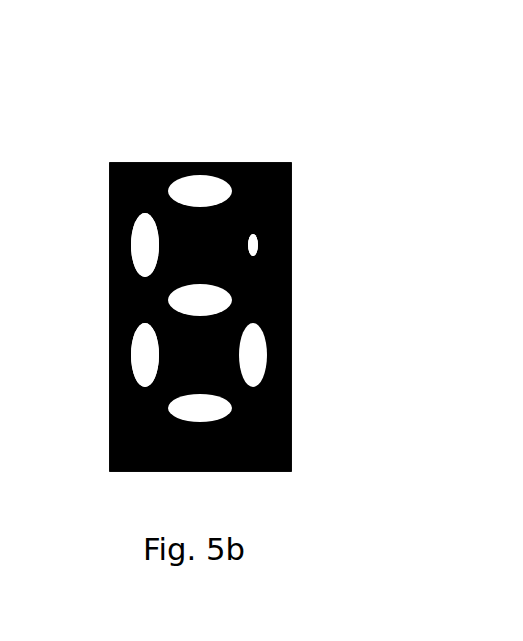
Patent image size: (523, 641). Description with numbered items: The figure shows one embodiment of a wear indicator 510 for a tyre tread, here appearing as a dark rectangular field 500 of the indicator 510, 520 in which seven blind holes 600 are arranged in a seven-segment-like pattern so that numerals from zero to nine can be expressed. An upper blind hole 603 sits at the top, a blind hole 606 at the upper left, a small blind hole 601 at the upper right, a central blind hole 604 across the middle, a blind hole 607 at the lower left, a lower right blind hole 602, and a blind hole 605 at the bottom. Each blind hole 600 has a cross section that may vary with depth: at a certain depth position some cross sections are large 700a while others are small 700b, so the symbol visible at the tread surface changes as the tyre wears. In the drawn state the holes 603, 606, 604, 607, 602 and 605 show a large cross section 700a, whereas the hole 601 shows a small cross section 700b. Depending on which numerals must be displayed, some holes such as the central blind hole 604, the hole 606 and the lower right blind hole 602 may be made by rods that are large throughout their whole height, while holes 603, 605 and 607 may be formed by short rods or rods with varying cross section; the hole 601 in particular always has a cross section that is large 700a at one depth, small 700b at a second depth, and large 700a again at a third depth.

The plate / substrate 500 is at (153, 155).
The wear indicator 510 is at (222, 140).
The second layer 520 is at (200, 265).
The blind holes 600 is at (130, 230).
The blind hole 601 is at (247, 237).
The lower right blind hole 602 is at (247, 352).
The blind hole 603 is at (190, 183).
The central blind hole 604 is at (203, 292).
The blind hole 605 is at (192, 402).
The blind hole 606 is at (125, 242).
The blind hole 607 is at (125, 342).
The large cross section 700a is at (137, 347).
The small cross section 700b is at (315, 225).